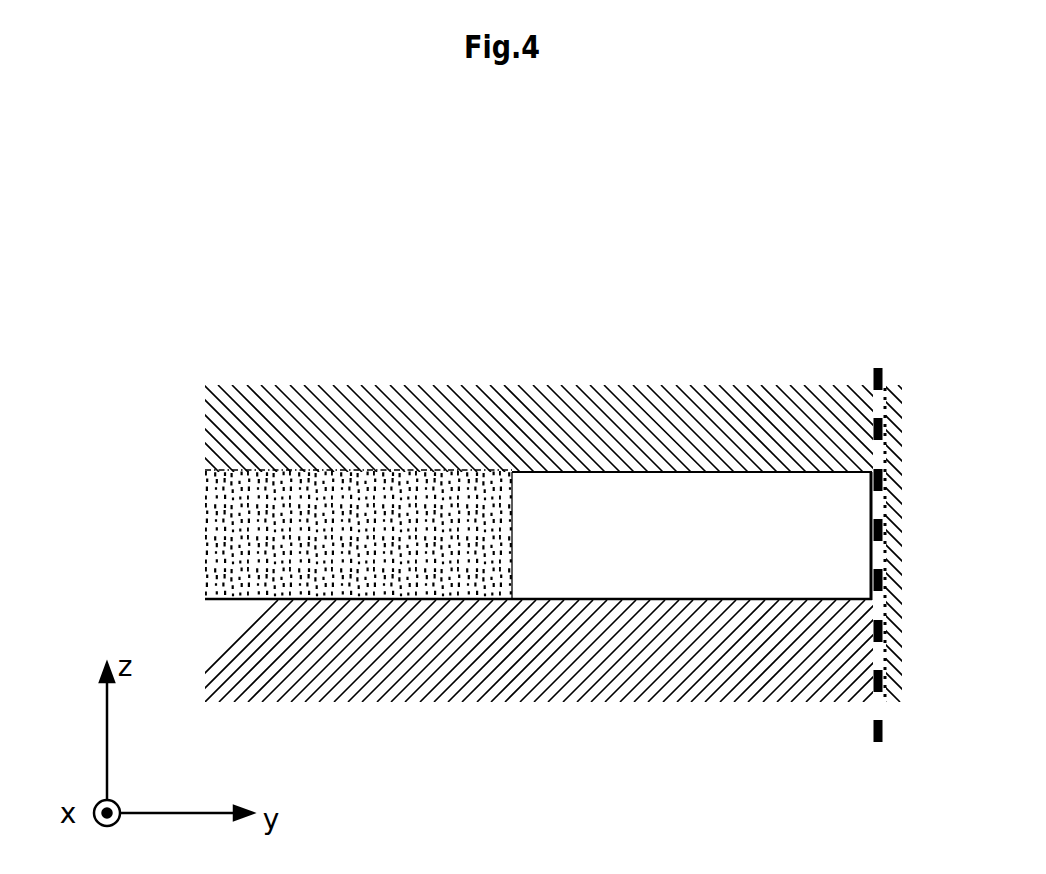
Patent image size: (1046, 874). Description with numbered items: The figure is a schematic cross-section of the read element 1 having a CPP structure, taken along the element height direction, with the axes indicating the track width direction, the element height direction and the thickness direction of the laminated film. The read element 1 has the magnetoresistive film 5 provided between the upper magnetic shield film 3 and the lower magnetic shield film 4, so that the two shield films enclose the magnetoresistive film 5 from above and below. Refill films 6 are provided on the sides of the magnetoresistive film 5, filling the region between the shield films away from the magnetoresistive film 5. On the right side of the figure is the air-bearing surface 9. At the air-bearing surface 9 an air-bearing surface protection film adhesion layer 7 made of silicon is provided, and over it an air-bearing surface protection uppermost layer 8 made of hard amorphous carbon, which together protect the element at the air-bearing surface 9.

The read element 1 is at (285, 244).
The upper magnetic shield film 3 is at (365, 410).
The lower magnetic shield film 4 is at (590, 662).
The magnetoresistive film 5 is at (576, 515).
The refill film 6 is at (210, 562).
The air-bearing surface protection film adhesion layer 7 is at (890, 385).
The air-bearing surface protection uppermost layer 8 is at (900, 385).
The air-bearing surface 9 is at (887, 583).